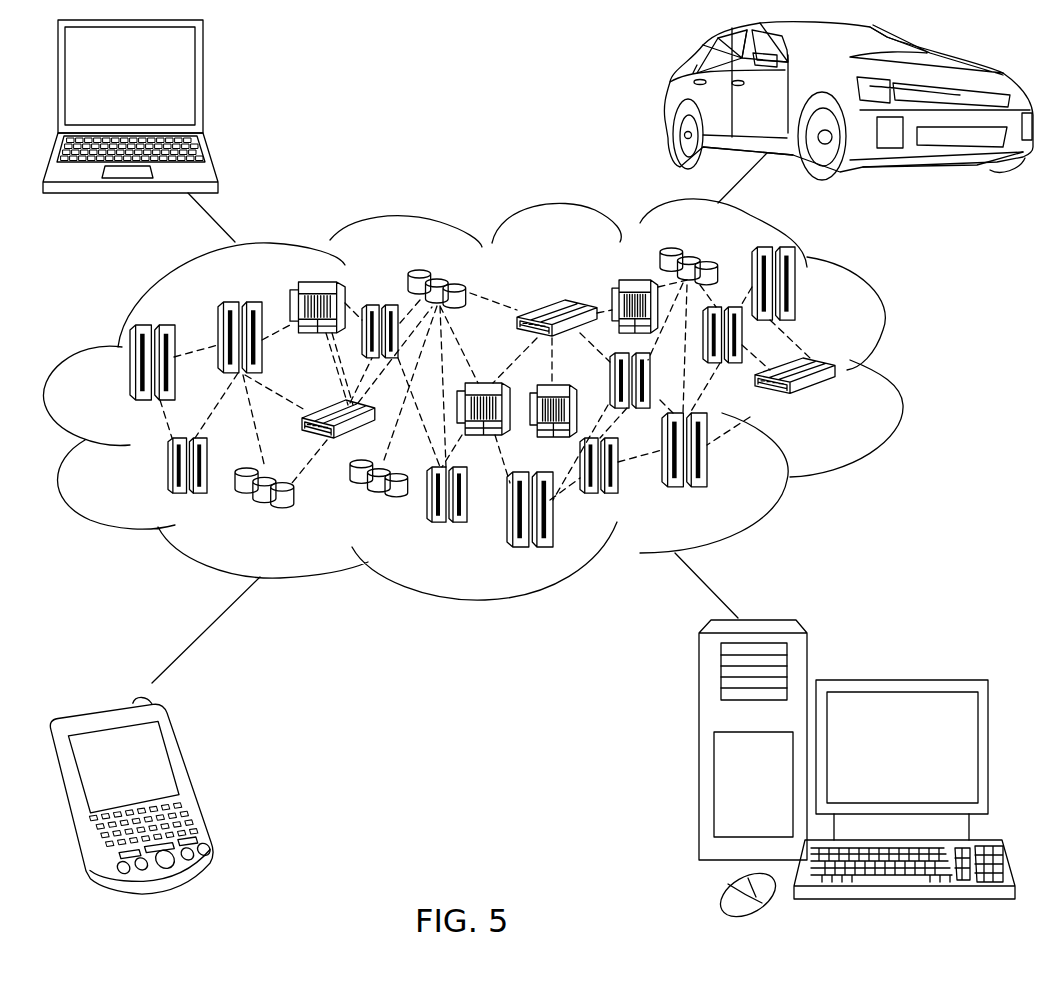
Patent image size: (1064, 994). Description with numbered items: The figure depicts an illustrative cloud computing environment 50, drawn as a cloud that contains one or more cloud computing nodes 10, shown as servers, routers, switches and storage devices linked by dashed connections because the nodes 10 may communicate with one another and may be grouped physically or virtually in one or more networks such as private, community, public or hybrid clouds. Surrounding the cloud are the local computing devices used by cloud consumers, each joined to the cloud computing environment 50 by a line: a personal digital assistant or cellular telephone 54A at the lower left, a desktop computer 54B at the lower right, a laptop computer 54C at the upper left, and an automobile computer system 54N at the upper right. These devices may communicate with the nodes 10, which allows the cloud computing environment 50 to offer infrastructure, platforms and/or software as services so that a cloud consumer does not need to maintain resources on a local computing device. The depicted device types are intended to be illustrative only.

The cloud computing node 10 is at (838, 405).
The cloud computing environment 50 is at (900, 373).
The personal digital assistant (PDA) or cellular telephone 54A is at (193, 777).
The desktop computer 54B is at (900, 680).
The laptop computer 54C is at (203, 83).
The automobile computer system 54N is at (670, 98).